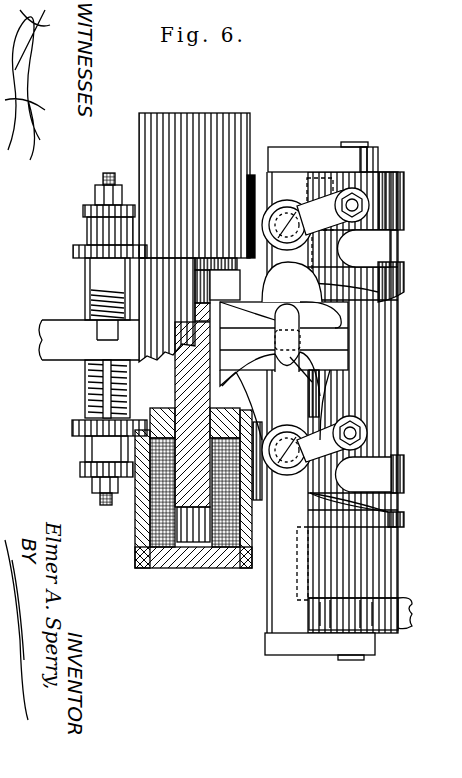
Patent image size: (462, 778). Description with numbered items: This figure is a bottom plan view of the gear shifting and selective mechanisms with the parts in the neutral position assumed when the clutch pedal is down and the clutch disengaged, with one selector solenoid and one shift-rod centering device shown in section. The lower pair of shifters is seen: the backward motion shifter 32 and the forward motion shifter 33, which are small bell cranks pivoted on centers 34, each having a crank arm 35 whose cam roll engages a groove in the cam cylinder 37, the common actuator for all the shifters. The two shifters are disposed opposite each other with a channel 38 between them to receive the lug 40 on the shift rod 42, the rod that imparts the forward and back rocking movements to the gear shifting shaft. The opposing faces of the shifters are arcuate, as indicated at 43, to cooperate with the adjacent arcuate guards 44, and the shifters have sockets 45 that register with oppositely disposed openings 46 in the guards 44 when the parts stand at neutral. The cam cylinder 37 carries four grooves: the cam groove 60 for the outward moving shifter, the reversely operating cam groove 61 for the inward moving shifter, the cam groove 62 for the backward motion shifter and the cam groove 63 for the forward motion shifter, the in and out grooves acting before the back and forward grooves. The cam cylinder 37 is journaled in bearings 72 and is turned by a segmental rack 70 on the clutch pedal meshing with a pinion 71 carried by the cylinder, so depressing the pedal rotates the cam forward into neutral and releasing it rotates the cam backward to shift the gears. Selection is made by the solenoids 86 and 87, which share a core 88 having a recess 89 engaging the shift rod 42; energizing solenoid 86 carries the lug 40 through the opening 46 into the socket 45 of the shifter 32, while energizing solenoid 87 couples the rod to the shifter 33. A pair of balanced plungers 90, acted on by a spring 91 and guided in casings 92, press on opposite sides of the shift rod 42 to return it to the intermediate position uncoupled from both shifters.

The backward motion shifter 32 is at (276, 396).
The forward motion shifter 33 is at (280, 294).
The pivot center 34 is at (283, 220).
The crank arm 35 is at (330, 196).
The cam cylinder 37 is at (386, 372).
The channel 38 is at (316, 341).
The lug 40 is at (272, 328).
The shift rod 42 is at (48, 325).
The arcuate face 43 is at (236, 372).
The arcuate guard 44 is at (354, 366).
The socket 45 is at (304, 378).
The opening 46 is at (296, 354).
The cam groove 60 is at (404, 302).
The cam groove 61 is at (403, 528).
The cam groove 62 is at (402, 474).
The cam groove 63 is at (402, 247).
The segmental rack 70 is at (406, 607).
The pinion 71 is at (374, 633).
The bearing 72 is at (318, 152).
The solenoid 86 is at (195, 575).
The solenoid 87 is at (185, 126).
The solenoid core 88 is at (178, 388).
The recess 89 is at (195, 311).
The plunger 90 is at (88, 370).
The spring 91 is at (88, 303).
The casing 92 is at (86, 270).